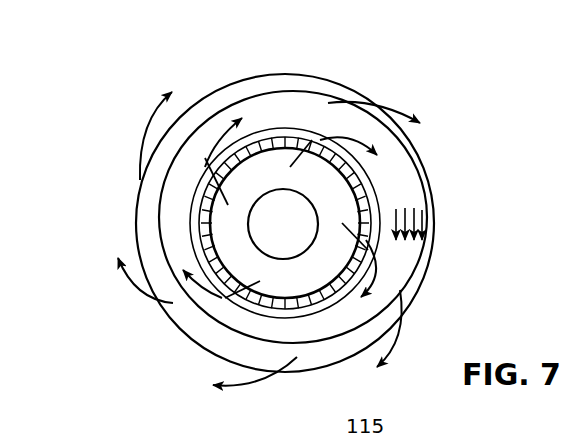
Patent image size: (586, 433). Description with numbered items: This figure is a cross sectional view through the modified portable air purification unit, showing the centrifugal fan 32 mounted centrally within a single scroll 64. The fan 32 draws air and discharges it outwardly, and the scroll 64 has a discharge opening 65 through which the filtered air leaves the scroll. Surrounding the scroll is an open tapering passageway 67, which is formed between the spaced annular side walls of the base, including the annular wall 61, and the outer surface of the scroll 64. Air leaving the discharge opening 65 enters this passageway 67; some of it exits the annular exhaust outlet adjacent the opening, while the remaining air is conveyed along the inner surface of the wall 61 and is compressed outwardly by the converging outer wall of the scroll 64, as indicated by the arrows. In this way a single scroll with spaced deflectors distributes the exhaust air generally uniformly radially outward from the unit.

The centrifugal fan 32 is at (362, 196).
The annular wall 61 is at (229, 85).
The scroll 64 is at (207, 319).
The discharge opening 65 is at (424, 247).
The open tapering passageway 67 is at (321, 85).